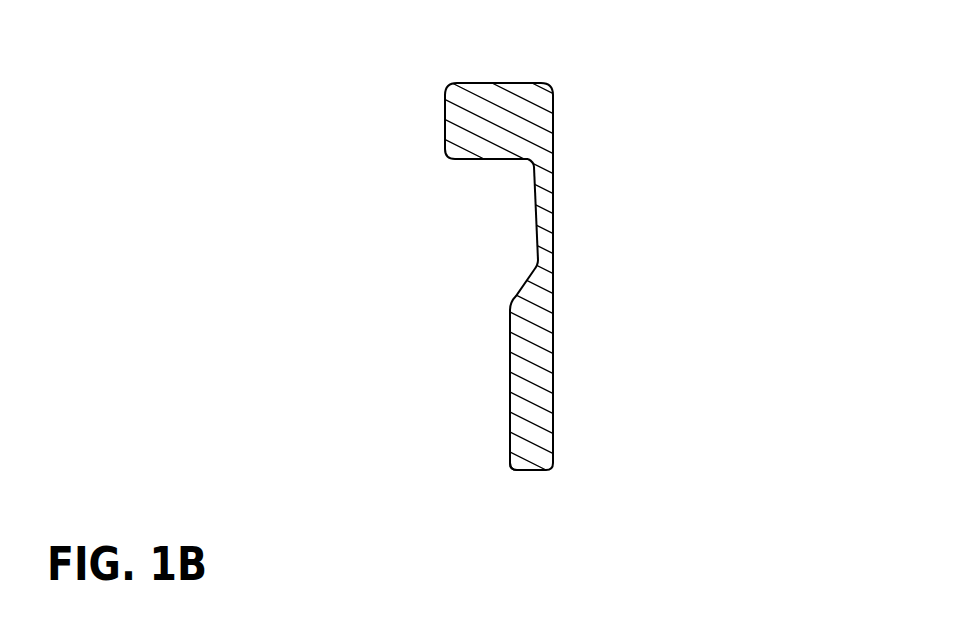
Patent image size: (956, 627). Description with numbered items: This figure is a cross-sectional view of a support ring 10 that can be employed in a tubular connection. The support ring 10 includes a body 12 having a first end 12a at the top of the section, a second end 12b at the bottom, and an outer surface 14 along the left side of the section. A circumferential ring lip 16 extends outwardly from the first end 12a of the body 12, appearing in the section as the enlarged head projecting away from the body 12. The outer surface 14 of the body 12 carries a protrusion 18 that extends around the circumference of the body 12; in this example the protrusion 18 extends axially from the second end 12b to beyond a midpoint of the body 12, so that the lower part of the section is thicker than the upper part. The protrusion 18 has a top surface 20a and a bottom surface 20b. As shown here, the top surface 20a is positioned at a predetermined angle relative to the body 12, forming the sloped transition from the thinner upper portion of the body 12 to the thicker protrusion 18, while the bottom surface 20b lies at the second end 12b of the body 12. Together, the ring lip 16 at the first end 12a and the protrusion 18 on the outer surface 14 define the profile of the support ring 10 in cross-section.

The support ring 10 is at (504, 258).
The body 12 is at (553, 222).
The first end 12a is at (534, 163).
The second end 12b is at (552, 465).
The outer surface 14 is at (533, 207).
The circumferential ring lip 16 is at (445, 115).
The protrusion 18 is at (527, 385).
The top surface 20a is at (523, 285).
The bottom surface 20b is at (515, 468).